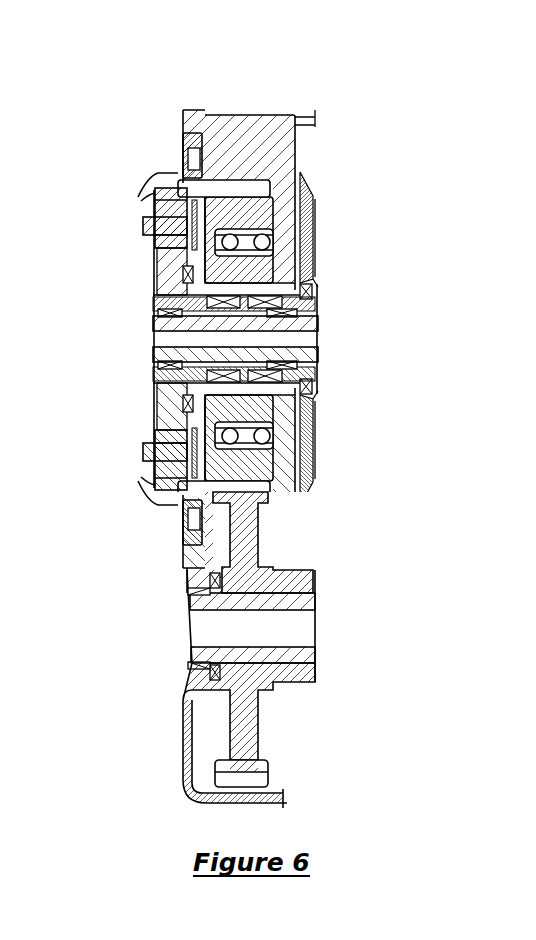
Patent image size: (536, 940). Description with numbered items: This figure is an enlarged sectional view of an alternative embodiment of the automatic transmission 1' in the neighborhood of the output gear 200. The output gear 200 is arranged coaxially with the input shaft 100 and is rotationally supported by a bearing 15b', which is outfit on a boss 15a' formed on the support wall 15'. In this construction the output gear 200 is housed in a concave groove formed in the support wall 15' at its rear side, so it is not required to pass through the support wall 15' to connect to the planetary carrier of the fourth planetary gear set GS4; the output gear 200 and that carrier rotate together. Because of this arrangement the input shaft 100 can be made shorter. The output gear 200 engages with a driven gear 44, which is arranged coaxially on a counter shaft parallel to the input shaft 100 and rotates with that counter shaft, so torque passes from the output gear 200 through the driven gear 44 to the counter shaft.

The automatic transmission 1' is at (290, 73).
The support wall 15' is at (269, 339).
The boss 15a' is at (304, 339).
The bearing 15b' is at (309, 339).
The output gear 200 is at (228, 193).
The input shaft 100 is at (320, 353).
The fourth planetary gear set GS4 is at (141, 270).
The driven gear 44 is at (258, 731).